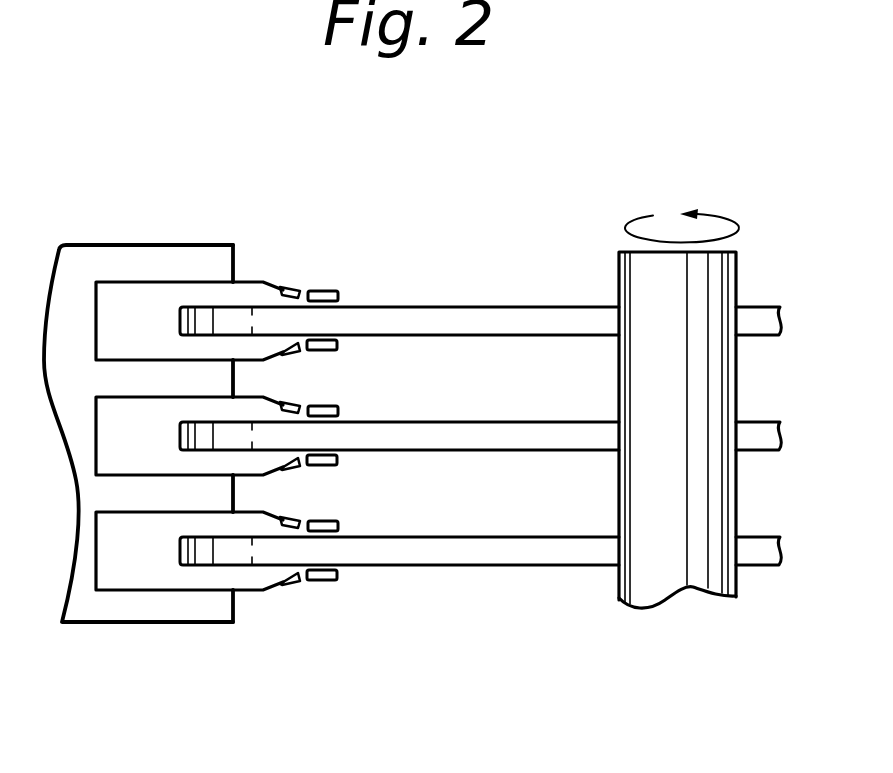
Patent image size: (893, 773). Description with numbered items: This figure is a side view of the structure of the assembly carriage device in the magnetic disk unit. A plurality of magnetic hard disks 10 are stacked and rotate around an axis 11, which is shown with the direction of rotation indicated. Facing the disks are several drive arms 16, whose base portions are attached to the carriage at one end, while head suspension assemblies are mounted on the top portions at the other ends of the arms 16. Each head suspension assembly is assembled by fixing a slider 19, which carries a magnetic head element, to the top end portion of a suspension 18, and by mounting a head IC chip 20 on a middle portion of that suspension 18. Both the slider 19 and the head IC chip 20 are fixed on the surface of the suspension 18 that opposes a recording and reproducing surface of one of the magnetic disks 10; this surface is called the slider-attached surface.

The magnetic hard disk 10 is at (500, 307).
The axis 11 is at (687, 575).
The drive arm 16 is at (147, 263).
The suspension 18 is at (247, 279).
The slider 19 is at (338, 293).
The head IC chip 20 is at (290, 286).